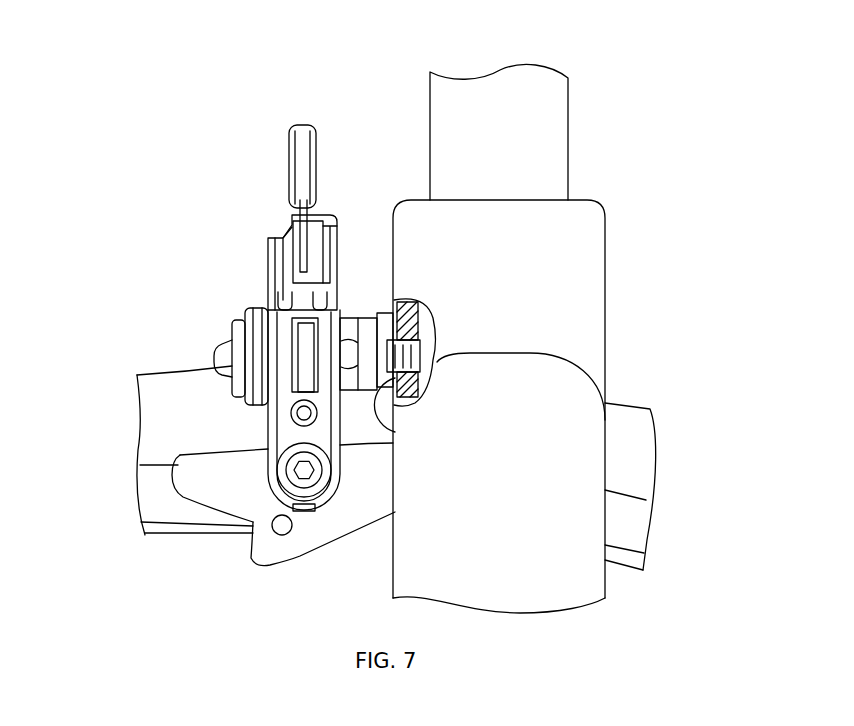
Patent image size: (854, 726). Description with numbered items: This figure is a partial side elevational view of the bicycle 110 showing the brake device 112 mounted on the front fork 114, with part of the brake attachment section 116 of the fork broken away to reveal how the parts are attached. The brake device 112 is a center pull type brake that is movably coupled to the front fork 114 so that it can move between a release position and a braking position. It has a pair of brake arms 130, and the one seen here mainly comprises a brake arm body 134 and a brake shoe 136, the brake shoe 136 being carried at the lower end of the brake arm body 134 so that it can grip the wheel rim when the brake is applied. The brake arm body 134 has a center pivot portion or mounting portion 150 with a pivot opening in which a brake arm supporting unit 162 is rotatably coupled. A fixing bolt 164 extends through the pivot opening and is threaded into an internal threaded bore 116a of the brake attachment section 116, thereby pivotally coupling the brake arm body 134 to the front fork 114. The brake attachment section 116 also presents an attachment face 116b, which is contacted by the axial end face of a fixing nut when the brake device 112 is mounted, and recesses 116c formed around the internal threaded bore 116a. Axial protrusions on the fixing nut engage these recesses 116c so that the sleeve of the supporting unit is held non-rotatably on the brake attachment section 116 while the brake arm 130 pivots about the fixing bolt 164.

The bicycle 110 is at (167, 162).
The brake device 112 is at (222, 246).
The front fork 114 is at (625, 286).
The brake attachment section 116 is at (420, 291).
The internal threaded bore 116a is at (428, 330).
The attachment face 116b is at (398, 425).
The recesses 116c is at (405, 298).
The brake arm 130 is at (222, 314).
The brake arm body 134 is at (290, 428).
The brake shoe 136 is at (199, 510).
The mounting portion 150 is at (283, 320).
The brake arm supporting unit 162 is at (357, 298).
The fixing bolt 164 is at (221, 352).